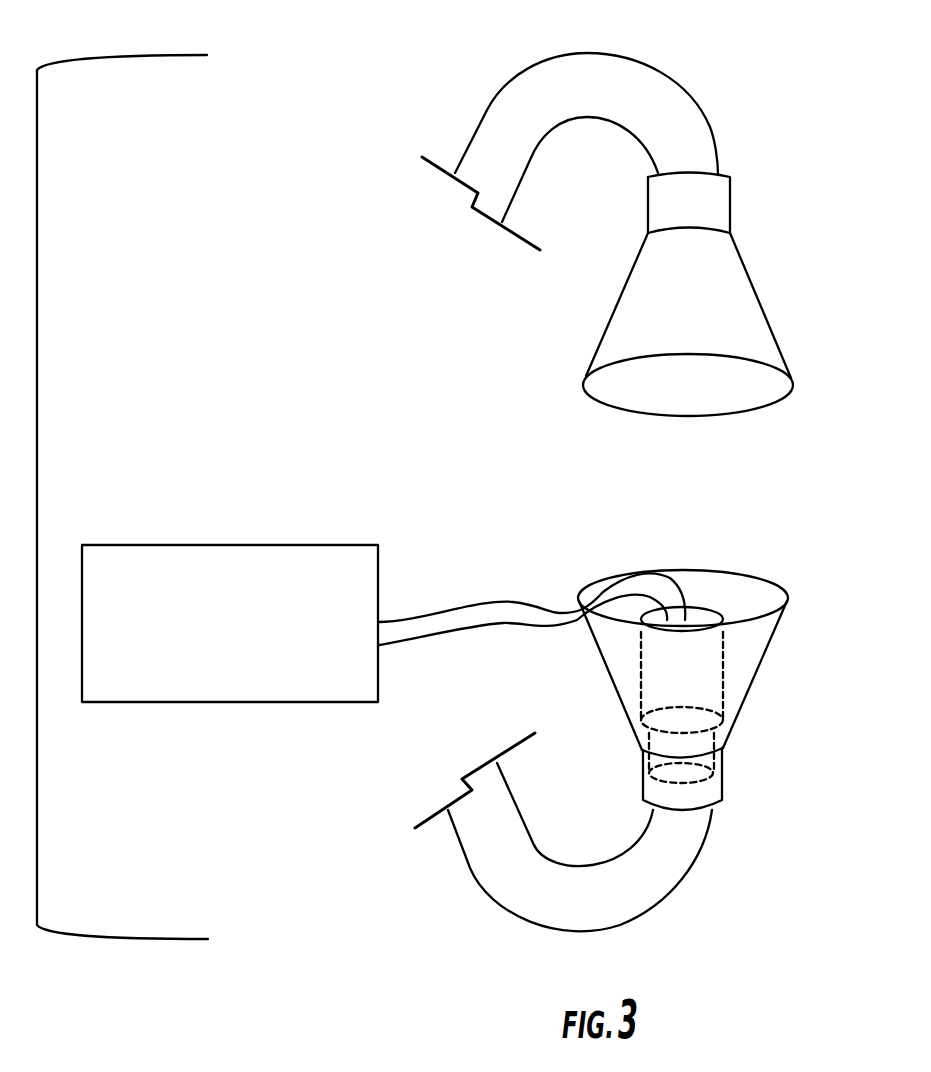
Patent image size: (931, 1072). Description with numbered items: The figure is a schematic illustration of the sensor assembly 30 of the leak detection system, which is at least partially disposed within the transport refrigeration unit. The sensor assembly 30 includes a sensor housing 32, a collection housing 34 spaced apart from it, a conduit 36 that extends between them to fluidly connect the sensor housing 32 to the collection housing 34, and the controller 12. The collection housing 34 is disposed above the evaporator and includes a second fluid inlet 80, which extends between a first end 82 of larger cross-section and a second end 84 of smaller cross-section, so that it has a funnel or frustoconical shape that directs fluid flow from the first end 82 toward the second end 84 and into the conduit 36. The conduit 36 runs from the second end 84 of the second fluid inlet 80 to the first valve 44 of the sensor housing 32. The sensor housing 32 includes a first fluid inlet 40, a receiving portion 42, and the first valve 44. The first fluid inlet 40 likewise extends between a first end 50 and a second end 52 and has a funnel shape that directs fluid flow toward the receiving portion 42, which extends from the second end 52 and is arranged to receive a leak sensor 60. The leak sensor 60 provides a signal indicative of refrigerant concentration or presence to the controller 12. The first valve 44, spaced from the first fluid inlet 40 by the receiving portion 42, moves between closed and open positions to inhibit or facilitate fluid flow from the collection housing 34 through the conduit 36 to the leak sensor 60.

The controller 12 is at (197, 543).
The sensor assembly 30 is at (37, 388).
The sensor housing 32 is at (723, 681).
The collection housing 34 is at (706, 329).
The conduit 36 is at (528, 62).
The first fluid inlet 40 is at (747, 537).
The receiving portion 42 is at (700, 782).
The first valve 44 is at (712, 800).
The first end 50 is at (613, 575).
The second end 52 is at (640, 750).
The leak sensor 60 is at (697, 672).
The second fluid inlet 80 is at (687, 355).
The first end 82 is at (652, 417).
The second end 84 is at (648, 227).